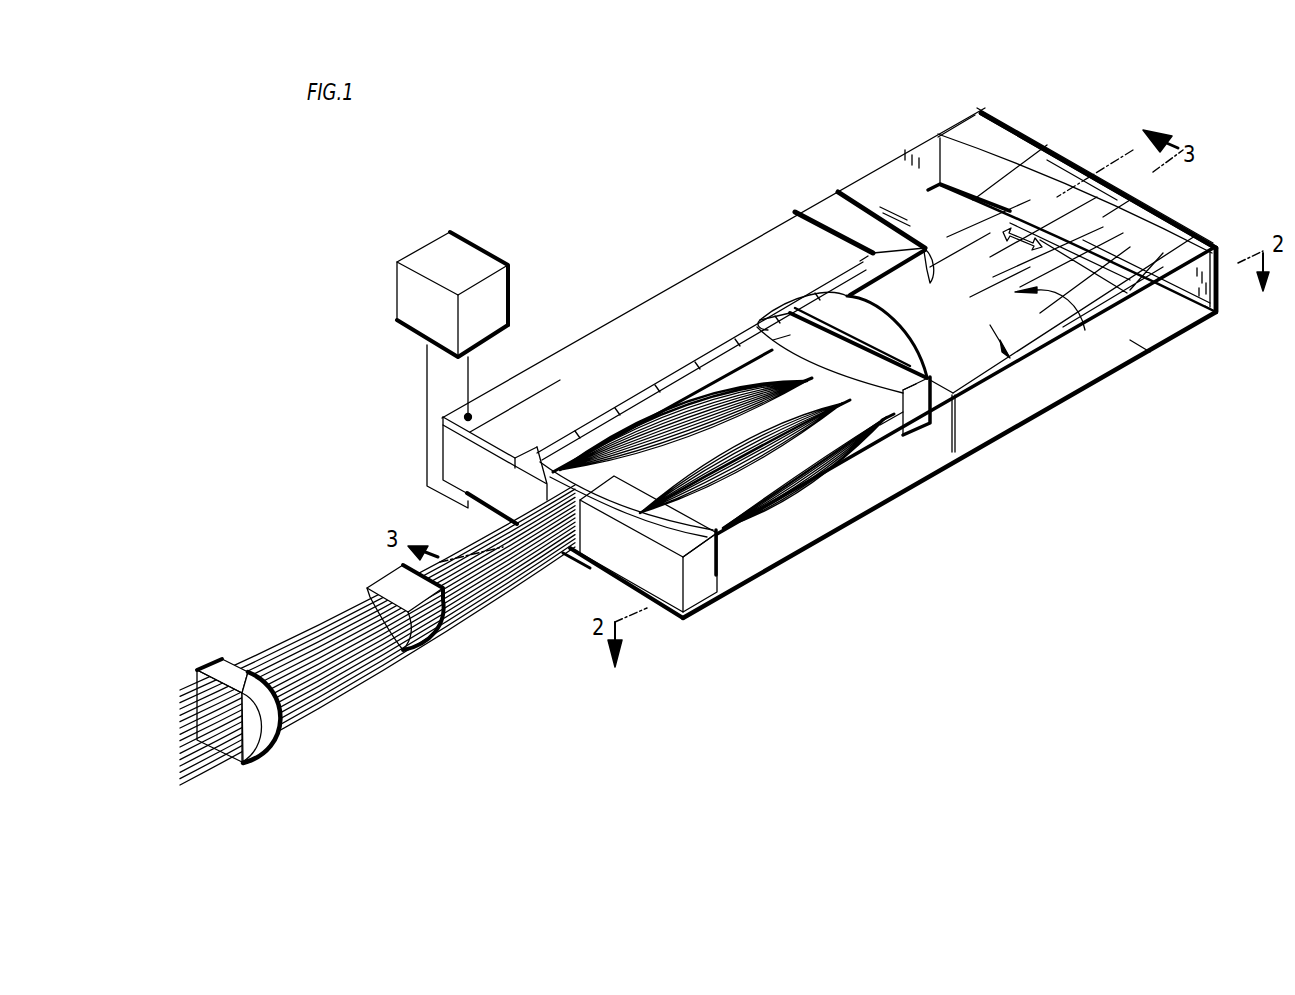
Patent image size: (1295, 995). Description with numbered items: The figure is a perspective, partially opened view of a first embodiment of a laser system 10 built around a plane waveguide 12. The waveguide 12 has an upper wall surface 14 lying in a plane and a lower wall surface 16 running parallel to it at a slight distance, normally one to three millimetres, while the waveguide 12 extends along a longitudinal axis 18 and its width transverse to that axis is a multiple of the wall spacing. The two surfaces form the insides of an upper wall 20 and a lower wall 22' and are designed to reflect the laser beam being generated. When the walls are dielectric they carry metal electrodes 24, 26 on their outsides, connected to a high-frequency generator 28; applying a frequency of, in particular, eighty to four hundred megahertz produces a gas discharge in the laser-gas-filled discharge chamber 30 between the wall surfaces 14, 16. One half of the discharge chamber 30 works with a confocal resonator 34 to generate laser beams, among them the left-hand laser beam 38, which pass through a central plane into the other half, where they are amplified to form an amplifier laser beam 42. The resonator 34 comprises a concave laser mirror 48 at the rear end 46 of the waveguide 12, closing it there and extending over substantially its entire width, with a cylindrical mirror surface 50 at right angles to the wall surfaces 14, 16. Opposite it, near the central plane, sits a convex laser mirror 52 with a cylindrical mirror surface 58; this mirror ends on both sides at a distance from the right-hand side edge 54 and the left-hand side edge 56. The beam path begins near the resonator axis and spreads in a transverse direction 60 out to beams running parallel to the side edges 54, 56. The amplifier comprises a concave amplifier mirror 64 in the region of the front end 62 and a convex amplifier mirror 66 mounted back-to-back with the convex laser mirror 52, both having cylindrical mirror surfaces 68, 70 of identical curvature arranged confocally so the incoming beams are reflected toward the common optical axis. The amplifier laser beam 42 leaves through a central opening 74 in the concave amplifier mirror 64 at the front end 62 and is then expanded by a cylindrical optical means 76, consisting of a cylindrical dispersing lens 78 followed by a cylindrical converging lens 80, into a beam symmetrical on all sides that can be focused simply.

The laser system 10 is at (770, 205).
The plane waveguide 12 is at (728, 275).
The upper wall surface 14 is at (930, 255).
The lower wall surface 16 is at (1160, 253).
The longitudinal axis 18 is at (1110, 155).
The upper wall 20 is at (833, 200).
The lower wall 22' is at (922, 478).
The metal electrode 24 is at (650, 322).
The metal electrode 26 is at (827, 543).
The high-frequency generator 28 is at (403, 283).
The discharge chamber 30 is at (1143, 340).
The resonator 34 is at (1033, 358).
The left-hand laser beam 38 is at (810, 477).
The amplifier laser beam 42 is at (463, 597).
The rear end 46 is at (1193, 230).
The concave laser mirror 48 is at (990, 137).
The cylindrical mirror surface 50 is at (1217, 316).
The convex laser mirror 52 is at (820, 300).
The right-hand side edge 54 is at (907, 170).
The left-hand side edge 56 is at (953, 425).
The cylindrical mirror surface 58 is at (823, 300).
The transverse direction 60 is at (1090, 217).
The front end 62 is at (620, 560).
The concave amplifier mirror 64 is at (688, 542).
The convex amplifier mirror 66 is at (920, 437).
The cylindrical mirror surface 68 is at (713, 527).
The cylindrical mirror surface 70 is at (858, 430).
The central opening 74 is at (557, 513).
The cylindrical optical means 76 is at (367, 688).
The cylindrical dispersing lens 78 is at (377, 585).
The cylindrical converging lens 80 is at (213, 663).